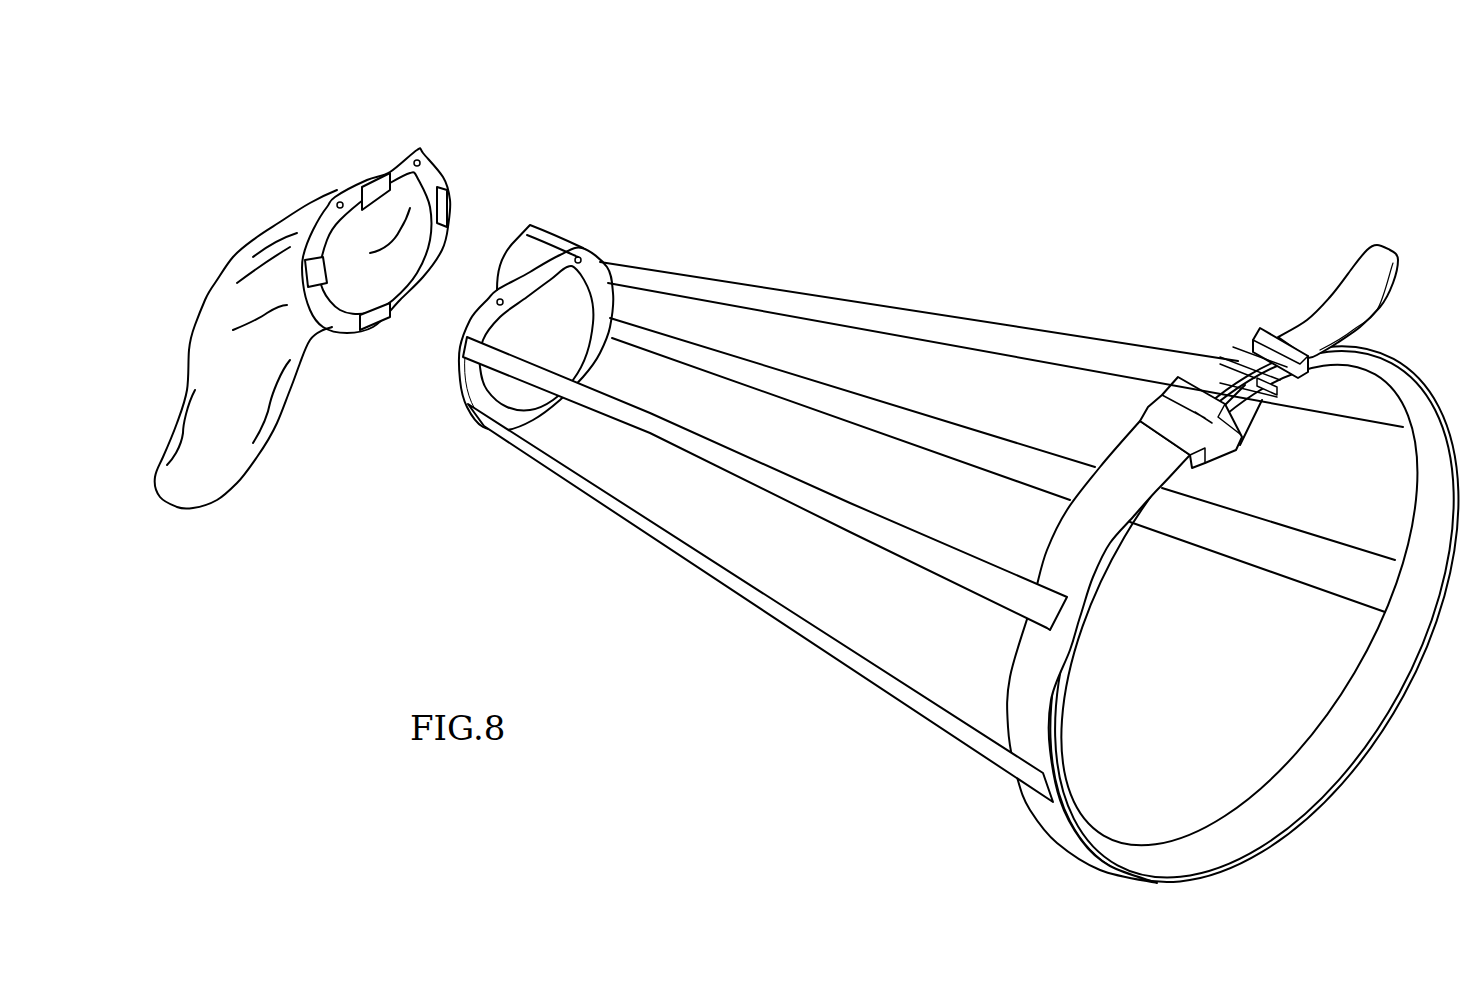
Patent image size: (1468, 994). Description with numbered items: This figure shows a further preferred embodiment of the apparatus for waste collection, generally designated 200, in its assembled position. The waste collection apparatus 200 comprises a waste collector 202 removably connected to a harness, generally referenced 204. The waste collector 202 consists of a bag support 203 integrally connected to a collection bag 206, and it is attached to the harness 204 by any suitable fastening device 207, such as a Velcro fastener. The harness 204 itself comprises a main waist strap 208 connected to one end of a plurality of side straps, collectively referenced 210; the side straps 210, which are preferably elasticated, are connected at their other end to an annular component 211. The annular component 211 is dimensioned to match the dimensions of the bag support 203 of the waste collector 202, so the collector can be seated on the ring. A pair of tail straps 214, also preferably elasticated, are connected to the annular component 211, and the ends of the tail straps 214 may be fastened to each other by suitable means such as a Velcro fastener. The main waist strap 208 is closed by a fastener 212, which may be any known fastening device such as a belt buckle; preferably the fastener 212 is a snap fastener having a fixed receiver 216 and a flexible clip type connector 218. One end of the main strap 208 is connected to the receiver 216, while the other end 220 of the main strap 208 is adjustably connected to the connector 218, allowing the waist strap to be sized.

The waste collection apparatus 200 is at (630, 150).
The waste collector 202 is at (333, 152).
The bag support 203 is at (430, 160).
The harness 204 is at (905, 802).
The collection bag 206 is at (217, 287).
The fastening device 207 is at (383, 332).
The main waist strap 208 is at (1090, 537).
The side straps 210 is at (887, 317).
The annular component 211 is at (593, 250).
The fastener 212 is at (1197, 312).
The tail straps 214 is at (495, 250).
The fixed receiver 216 is at (1193, 413).
The flexible clip type connector 218 is at (1280, 383).
The other end of main strap 220 is at (1360, 285).